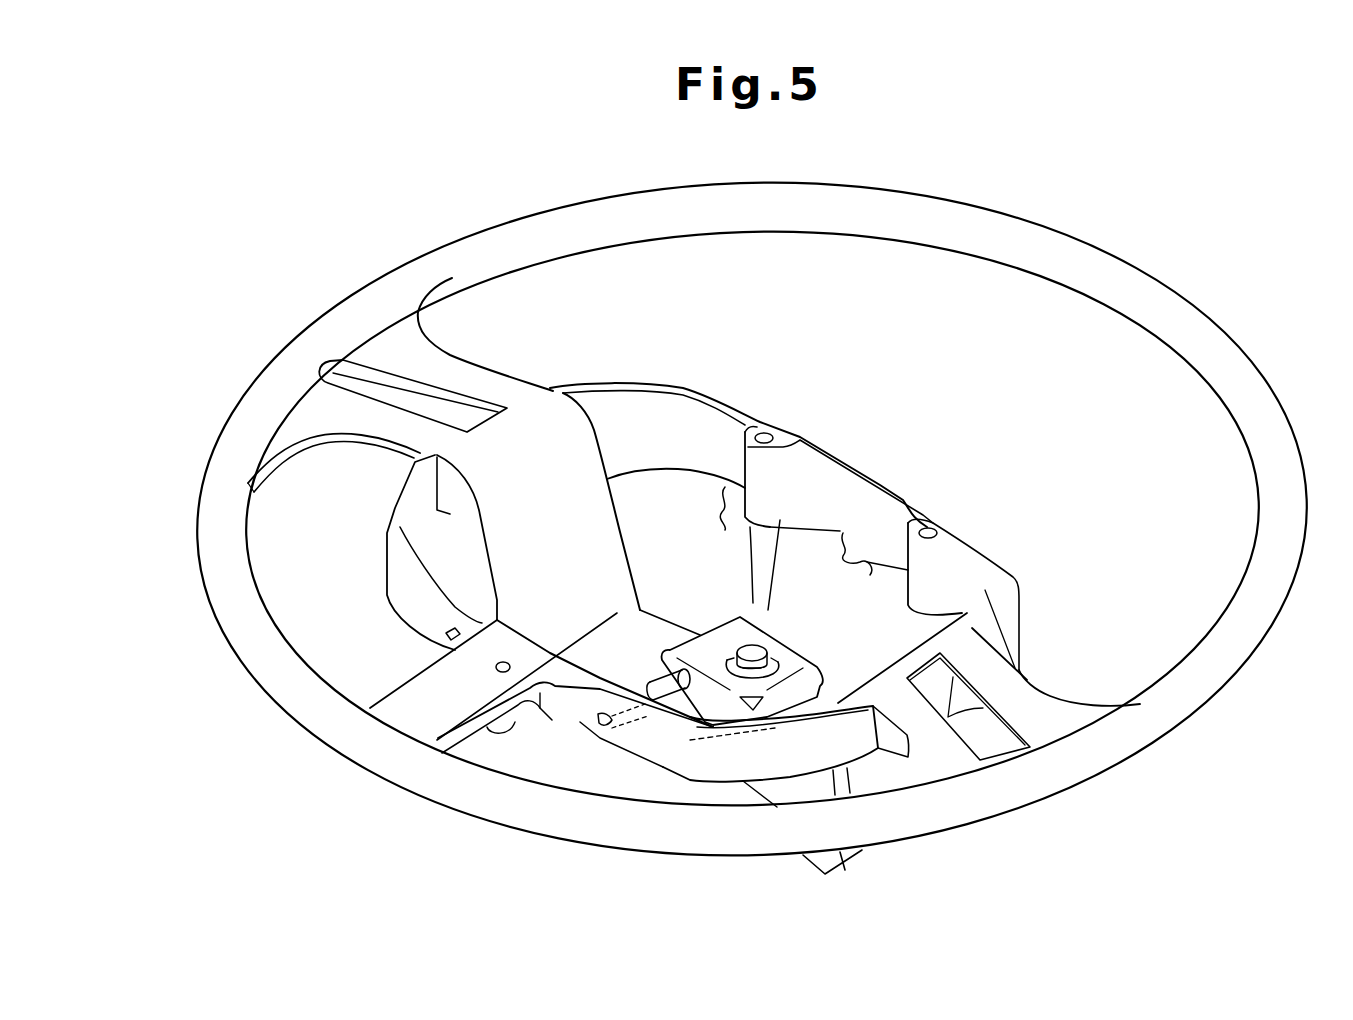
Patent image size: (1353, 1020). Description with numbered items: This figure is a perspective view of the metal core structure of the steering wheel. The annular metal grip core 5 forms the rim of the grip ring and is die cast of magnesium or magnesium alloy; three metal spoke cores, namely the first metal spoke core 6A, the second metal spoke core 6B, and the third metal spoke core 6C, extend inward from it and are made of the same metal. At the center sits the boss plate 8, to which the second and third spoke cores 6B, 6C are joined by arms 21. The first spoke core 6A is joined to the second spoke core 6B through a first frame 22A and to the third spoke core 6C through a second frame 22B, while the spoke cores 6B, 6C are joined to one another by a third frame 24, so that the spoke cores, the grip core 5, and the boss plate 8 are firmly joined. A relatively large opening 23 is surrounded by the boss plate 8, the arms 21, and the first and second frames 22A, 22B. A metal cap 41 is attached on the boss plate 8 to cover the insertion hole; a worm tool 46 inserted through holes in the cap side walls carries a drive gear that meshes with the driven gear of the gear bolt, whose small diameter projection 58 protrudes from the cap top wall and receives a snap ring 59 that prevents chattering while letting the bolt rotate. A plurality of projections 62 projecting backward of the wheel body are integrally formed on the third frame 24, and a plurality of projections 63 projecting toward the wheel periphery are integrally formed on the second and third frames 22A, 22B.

The metal grip core 5 is at (1203, 313).
The first metal spoke core 6A is at (440, 690).
The second metal spoke core 6B is at (345, 418).
The third metal spoke core 6C is at (1022, 690).
The boss plate 8 is at (680, 788).
The arm 21 is at (597, 512).
The first frame 22A is at (390, 575).
The second frame 22B is at (648, 735).
The opening 23 is at (368, 820).
The third frame 24 is at (873, 466).
The metal cap 41 is at (686, 624).
The worm tool 46 is at (660, 692).
The small diameter projection 58 is at (768, 650).
The snap ring 59 is at (797, 648).
The projections 62 is at (790, 545).
The projections 63 is at (446, 634).